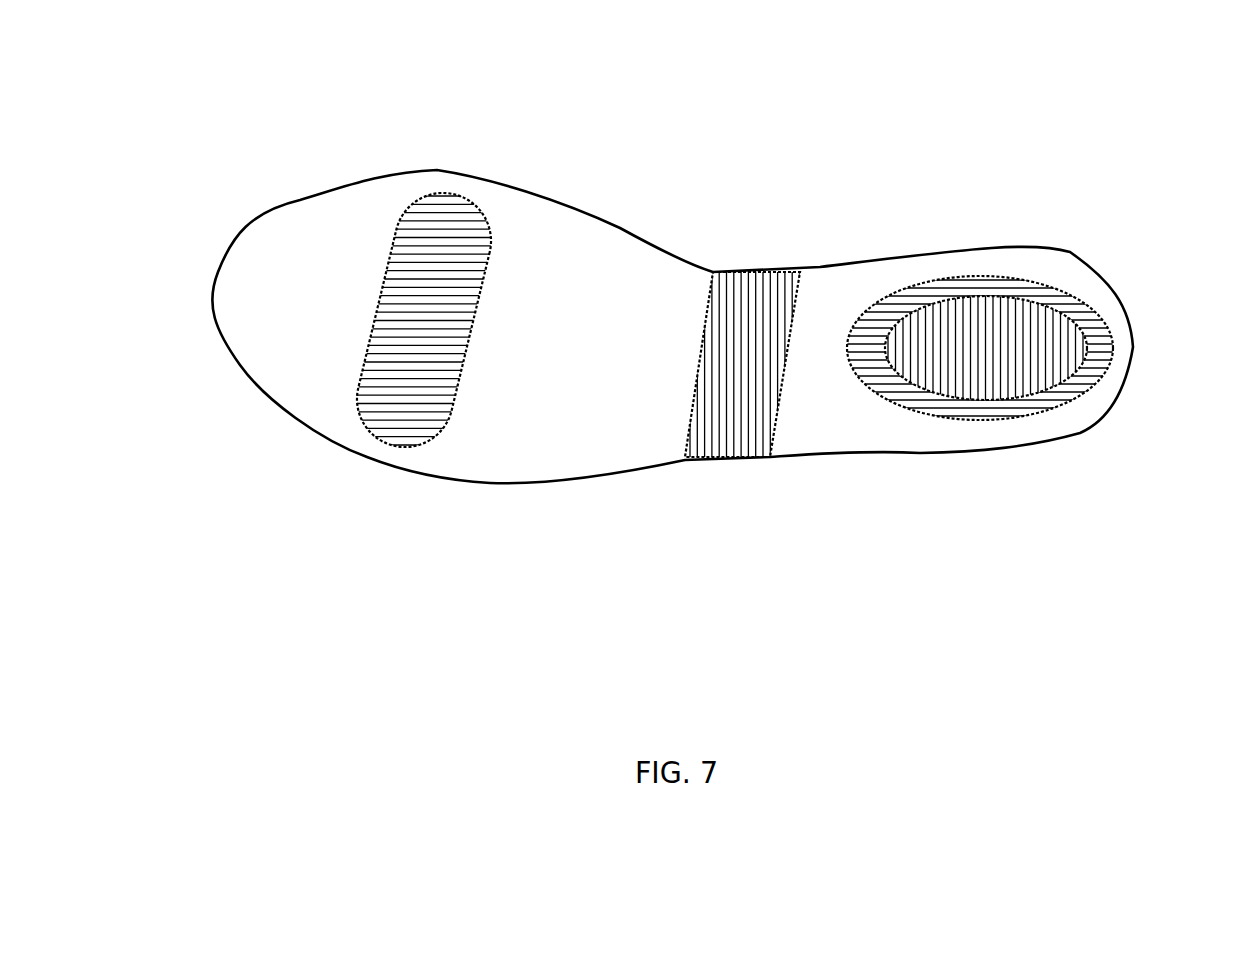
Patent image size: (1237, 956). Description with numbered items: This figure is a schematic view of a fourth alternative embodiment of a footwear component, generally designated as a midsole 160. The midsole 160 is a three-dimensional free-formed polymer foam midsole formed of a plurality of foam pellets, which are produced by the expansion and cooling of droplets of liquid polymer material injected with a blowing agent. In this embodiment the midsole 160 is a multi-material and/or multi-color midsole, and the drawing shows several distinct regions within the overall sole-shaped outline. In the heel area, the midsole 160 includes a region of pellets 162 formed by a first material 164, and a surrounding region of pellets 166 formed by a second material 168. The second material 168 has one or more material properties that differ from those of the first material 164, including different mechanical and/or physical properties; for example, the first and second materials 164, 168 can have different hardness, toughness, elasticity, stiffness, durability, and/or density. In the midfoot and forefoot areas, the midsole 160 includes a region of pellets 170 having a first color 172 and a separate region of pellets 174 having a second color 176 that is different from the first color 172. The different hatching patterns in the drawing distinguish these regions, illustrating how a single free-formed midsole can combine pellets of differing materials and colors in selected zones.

The midsole 160 is at (262, 190).
The region of pellets formed by a first material 162 is at (1020, 298).
The first material 164 is at (1005, 362).
The region of pellets formed by a second material 166 is at (953, 272).
The second material 168 is at (1093, 368).
The region of pellets having a first color 170 is at (707, 307).
The first color 172 is at (735, 418).
The region of pellets having a second color 174 is at (493, 238).
The second color 176 is at (403, 413).